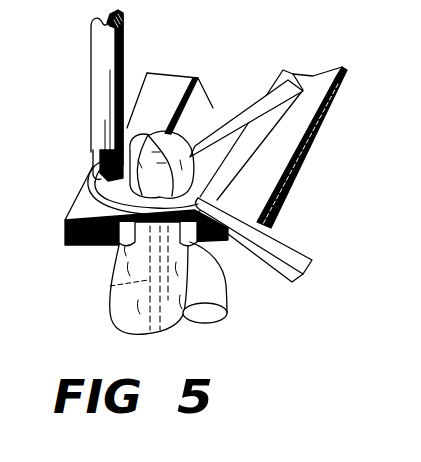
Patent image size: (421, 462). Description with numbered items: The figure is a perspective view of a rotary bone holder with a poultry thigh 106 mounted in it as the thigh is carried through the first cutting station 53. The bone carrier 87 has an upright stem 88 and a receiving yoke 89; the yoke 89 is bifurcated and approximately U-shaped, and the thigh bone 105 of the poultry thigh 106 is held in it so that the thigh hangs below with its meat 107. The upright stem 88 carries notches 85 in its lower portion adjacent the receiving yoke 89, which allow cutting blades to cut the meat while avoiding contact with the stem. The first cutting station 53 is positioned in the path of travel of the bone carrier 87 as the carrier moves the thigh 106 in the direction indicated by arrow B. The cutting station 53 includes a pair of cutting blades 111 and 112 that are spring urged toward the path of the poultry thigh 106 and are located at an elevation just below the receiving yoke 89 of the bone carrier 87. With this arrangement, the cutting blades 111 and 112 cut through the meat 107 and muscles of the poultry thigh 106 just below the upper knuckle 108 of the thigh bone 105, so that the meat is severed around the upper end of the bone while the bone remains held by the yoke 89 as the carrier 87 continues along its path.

The first cutting station 53 is at (212, 44).
The notches 85 is at (98, 172).
The bone carrier 87 is at (71, 87).
The upright stem 88 is at (98, 44).
The receiving yoke 89 is at (94, 202).
The thigh bone 105 is at (125, 278).
The poultry thigh 106 is at (238, 306).
The meat 107 is at (108, 318).
The upper knuckle 108 is at (202, 119).
The cutting blade 111 is at (118, 244).
The cutting blade 112 is at (190, 243).
The direction of movement arrow B is at (96, 340).